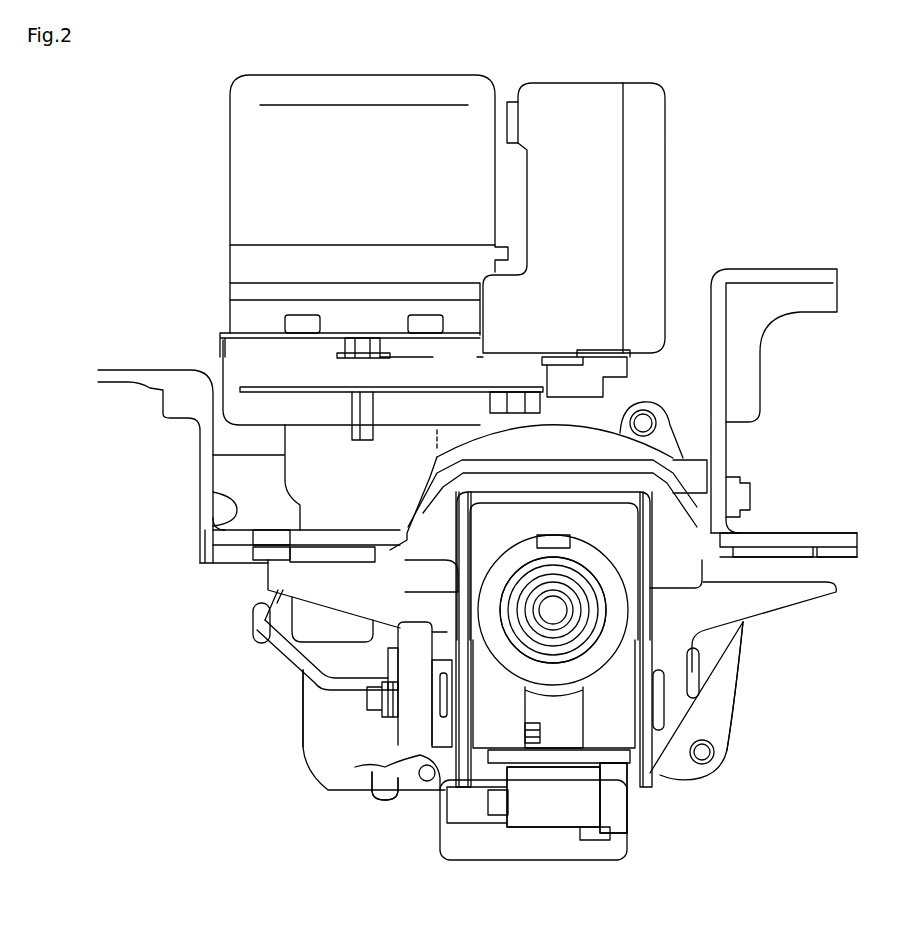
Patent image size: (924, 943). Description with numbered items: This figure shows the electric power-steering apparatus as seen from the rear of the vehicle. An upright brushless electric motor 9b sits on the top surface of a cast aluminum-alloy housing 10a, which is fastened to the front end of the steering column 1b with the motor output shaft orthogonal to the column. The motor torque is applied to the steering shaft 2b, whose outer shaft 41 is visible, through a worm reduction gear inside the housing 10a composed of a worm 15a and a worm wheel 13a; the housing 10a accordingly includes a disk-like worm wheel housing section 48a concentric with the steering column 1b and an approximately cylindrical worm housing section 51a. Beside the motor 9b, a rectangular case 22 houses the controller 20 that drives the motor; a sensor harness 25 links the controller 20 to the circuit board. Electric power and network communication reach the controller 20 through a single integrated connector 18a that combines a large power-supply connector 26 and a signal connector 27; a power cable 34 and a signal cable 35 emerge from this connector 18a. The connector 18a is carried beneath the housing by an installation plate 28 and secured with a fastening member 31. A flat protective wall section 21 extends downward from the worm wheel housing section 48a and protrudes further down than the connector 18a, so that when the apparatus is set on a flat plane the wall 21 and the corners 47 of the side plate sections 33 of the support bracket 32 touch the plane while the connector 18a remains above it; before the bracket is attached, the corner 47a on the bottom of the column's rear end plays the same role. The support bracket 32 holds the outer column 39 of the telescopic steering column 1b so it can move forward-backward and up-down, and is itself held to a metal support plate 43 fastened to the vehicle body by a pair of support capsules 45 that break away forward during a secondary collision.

The electric motor 9b is at (262, 143).
The case 22 is at (593, 170).
The controller 20 is at (580, 235).
The housing 10a is at (590, 445).
The steering column 1b is at (600, 540).
The outer column 39 is at (754, 494).
The support capsule 45 is at (325, 552).
The support plate 43 is at (840, 540).
The steering shaft 2b is at (575, 605).
The outer shaft 41 is at (590, 618).
The support bracket 32 is at (560, 688).
The side plate section 33 is at (462, 682).
The worm wheel housing section 48a is at (720, 683).
The worm wheel 13a is at (710, 693).
The corner 47a is at (630, 702).
The fastening member 31 is at (537, 728).
The installation plate 28 is at (630, 768).
The corner 47 is at (447, 780).
The connector 18a is at (563, 805).
The power-supply connector 26 is at (553, 797).
The signal connector 27 is at (613, 798).
The protective wall section 21 is at (453, 837).
The power cable 34 is at (378, 797).
The signal cable 35 is at (385, 786).
The sensor harness 25 is at (290, 650).
The worm housing section 51a is at (322, 718).
The worm 15a is at (322, 740).